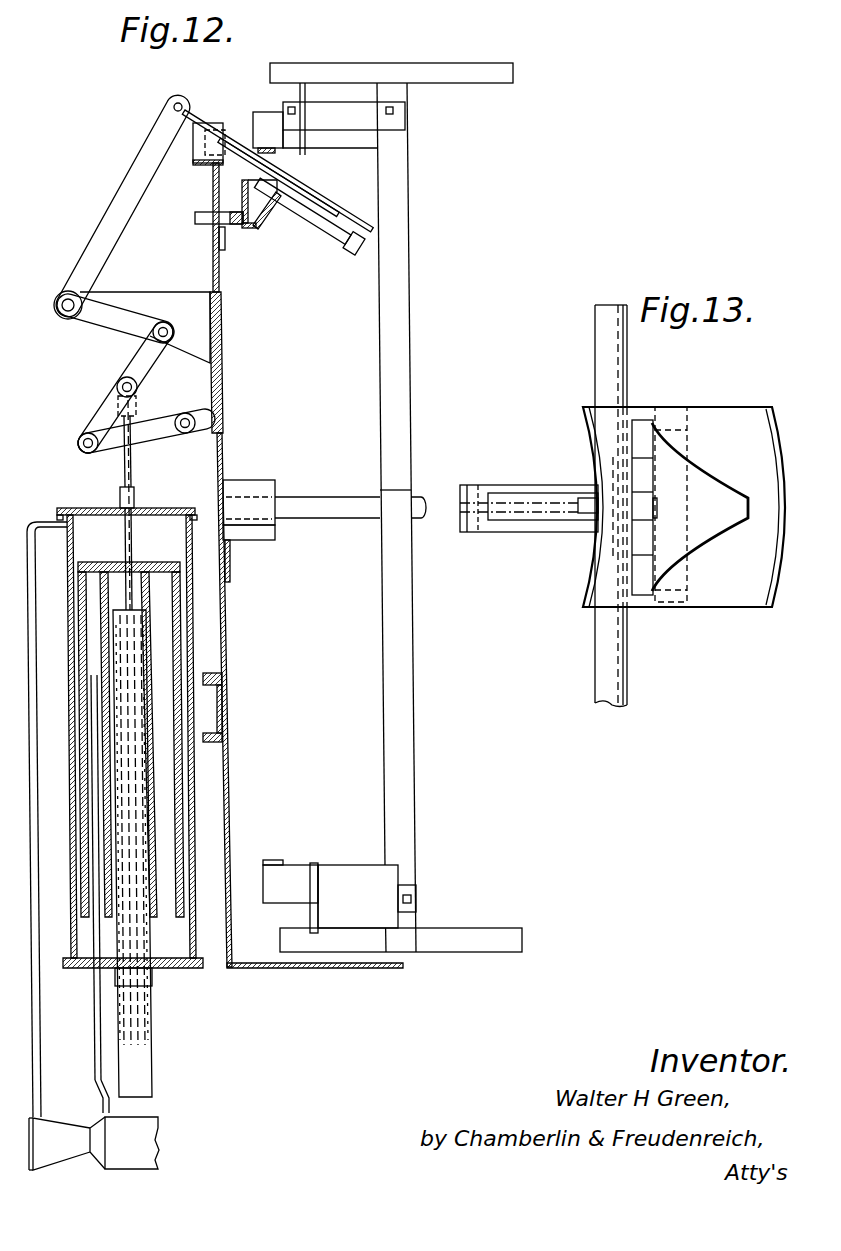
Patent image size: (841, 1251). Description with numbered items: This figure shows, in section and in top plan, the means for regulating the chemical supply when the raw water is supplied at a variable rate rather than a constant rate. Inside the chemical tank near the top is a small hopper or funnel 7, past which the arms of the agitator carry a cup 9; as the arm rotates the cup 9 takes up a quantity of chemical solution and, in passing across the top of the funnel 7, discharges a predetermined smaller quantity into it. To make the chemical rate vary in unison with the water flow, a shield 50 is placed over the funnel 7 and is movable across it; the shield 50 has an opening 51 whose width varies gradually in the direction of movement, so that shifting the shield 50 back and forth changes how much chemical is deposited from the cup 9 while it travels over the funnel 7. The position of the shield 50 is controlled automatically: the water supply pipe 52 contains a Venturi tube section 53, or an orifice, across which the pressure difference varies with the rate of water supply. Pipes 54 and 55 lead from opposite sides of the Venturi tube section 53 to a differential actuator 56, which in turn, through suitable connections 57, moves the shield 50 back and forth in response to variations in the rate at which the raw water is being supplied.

In FIG. 12, the funnel 7 is at (260, 200).
In FIG. 13, the funnel 7 is at (678, 598).
In FIG. 12, the cup 9 is at (332, 140).
In FIG. 12, the shield 50 is at (355, 240).
In FIG. 13, the shield 50 is at (717, 418).
In FIG. 13, the opening 51 is at (713, 480).
In FIG. 12, the water supply pipe 52 is at (143, 1125).
In FIG. 12, the Venturi tube section 53 is at (70, 1143).
In FIG. 12, the pipe 54 is at (40, 1025).
In FIG. 12, the pipe 55 is at (98, 1002).
In FIG. 12, the differential actuator 56 is at (187, 765).
In FIG. 12, the connections 57 is at (97, 245).
In FIG. 13, the connections 57 is at (523, 506).